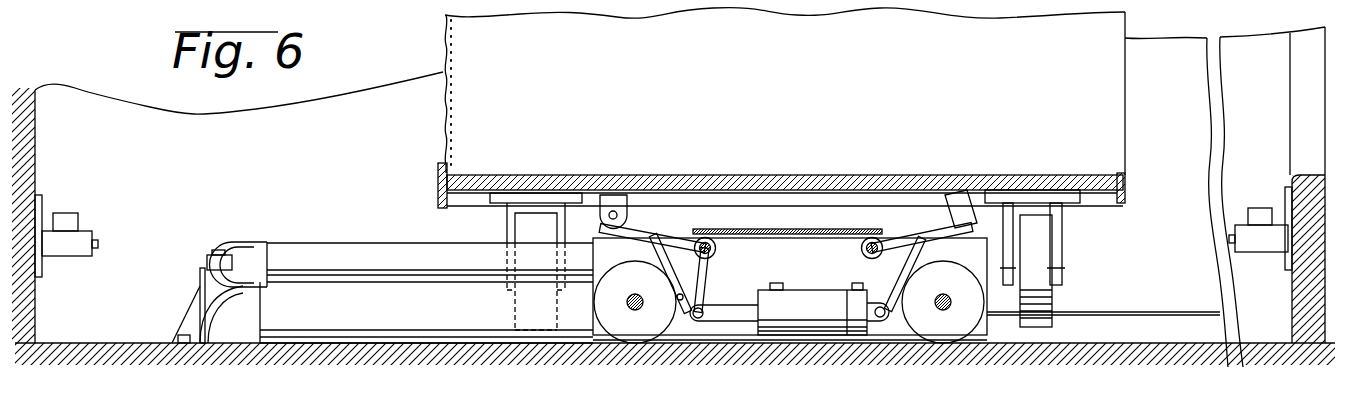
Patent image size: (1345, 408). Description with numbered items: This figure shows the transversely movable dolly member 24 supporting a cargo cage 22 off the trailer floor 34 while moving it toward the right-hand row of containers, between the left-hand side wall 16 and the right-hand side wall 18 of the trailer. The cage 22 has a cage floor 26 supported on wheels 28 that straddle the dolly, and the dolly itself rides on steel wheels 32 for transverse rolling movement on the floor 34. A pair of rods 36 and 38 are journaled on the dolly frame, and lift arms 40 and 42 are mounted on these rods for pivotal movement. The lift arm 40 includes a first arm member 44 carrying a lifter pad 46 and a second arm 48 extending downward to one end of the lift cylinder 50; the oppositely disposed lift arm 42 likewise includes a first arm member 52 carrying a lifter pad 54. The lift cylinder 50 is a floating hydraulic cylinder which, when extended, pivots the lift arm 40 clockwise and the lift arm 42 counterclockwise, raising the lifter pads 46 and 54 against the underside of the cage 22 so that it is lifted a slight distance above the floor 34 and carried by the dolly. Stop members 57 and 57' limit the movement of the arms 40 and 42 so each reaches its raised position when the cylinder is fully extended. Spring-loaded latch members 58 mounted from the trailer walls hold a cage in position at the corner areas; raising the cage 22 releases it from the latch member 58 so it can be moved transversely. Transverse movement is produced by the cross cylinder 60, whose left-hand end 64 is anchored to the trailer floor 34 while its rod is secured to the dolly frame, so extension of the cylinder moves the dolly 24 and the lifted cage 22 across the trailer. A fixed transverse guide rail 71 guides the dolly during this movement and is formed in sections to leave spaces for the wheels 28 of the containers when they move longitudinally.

The left-hand side wall 16 is at (36, 142).
The right-hand side wall 18 is at (1312, 172).
The cage 22 is at (443, 115).
The dolly member 24 is at (761, 224).
The cage floor 26 is at (822, 174).
The wheels 28 is at (530, 227).
The steel wheels 32 is at (637, 327).
The floor 34 is at (112, 345).
The rod 36 is at (717, 249).
The rod 38 is at (860, 249).
The lift arm 40 is at (686, 223).
The lift arm 42 is at (927, 216).
The first arm member 44 is at (650, 228).
The lifter pad 46 is at (615, 197).
The second arm 48 is at (695, 275).
The lift cylinder 50 is at (816, 320).
The first arm member 52 is at (912, 227).
The lifter pad 54 is at (957, 192).
The stop member 57 is at (686, 297).
The stop member 57' is at (909, 296).
The latch member 58 is at (66, 220).
The cross cylinder 60 is at (302, 247).
The left-hand end of cylinder 60 64 is at (207, 262).
The fixed transverse guide rail 71 is at (1133, 318).